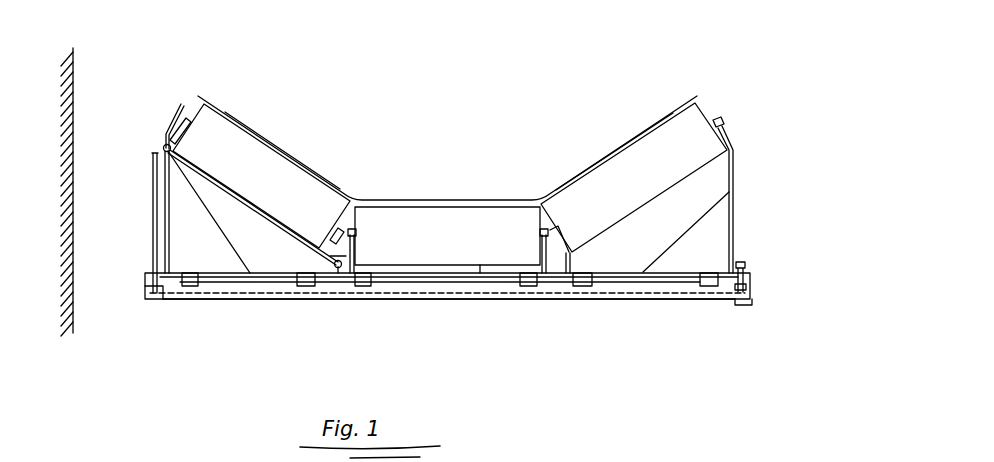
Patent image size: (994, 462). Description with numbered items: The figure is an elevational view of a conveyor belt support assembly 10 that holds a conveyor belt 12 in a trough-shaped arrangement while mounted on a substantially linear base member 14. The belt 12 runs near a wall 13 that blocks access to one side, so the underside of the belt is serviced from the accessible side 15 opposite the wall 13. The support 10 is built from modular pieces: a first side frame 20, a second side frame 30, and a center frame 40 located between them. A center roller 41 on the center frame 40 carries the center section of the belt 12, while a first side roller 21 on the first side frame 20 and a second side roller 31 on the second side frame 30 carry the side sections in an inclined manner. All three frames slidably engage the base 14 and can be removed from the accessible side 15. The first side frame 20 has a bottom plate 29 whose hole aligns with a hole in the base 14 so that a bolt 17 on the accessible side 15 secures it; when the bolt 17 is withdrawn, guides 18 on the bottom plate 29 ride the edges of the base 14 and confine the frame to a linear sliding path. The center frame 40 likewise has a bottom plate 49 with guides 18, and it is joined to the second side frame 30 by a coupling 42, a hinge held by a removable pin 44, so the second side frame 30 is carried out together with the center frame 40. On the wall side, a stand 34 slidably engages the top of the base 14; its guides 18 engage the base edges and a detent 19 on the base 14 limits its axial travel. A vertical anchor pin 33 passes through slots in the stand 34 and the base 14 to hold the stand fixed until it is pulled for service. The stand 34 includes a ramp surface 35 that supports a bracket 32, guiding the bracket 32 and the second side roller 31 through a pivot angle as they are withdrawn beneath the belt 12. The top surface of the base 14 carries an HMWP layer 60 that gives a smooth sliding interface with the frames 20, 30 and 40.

The support assembly 10 is at (343, 62).
The conveyor belt 12 is at (482, 202).
The wall 13 is at (73, 312).
The base member 14 is at (627, 290).
The accessible side 15 is at (740, 143).
The bolt 17 is at (738, 264).
The guides 18 is at (187, 284).
The detent 19 is at (218, 282).
The first side frame 20 is at (731, 172).
The first side roller 21 is at (642, 187).
The bottom plate 29 is at (683, 273).
The second side frame 30 is at (165, 165).
The second side roller 31 is at (260, 186).
The bracket 32 is at (310, 234).
The vertical anchor pin 33 is at (157, 182).
The stand 34 is at (167, 197).
The ramp surface 35 is at (203, 222).
The center frame 40 is at (367, 250).
The center roller 41 is at (452, 245).
The coupling 42 is at (336, 262).
The pin 44 is at (333, 262).
The bottom plate 49 is at (487, 272).
The HMWP layer 60 is at (612, 280).